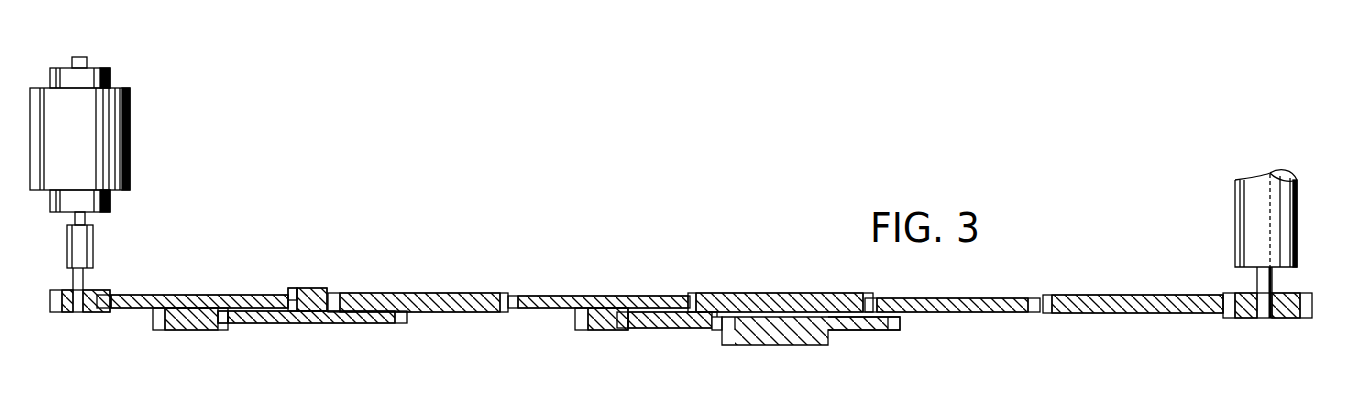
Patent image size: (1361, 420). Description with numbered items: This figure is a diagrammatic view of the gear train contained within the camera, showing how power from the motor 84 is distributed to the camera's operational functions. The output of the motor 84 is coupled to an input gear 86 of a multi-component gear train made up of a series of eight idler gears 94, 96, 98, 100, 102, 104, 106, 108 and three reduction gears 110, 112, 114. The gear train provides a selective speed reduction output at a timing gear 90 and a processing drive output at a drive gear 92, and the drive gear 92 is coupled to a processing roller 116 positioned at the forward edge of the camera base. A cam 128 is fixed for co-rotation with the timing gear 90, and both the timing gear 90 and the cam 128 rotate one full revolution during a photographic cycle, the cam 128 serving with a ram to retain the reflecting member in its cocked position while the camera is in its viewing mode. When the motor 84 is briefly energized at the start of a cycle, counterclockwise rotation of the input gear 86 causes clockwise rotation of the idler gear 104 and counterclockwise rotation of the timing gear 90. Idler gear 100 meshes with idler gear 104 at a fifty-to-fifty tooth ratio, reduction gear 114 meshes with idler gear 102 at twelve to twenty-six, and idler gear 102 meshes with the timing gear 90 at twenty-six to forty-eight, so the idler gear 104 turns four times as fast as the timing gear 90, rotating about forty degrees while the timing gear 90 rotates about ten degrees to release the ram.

The motor 84 is at (131, 128).
The input gear 86 is at (67, 313).
The timing gear 90 is at (882, 323).
The drive gear 92 is at (1280, 314).
The idler gear 94 is at (142, 296).
The idler gear 96 is at (391, 324).
The idler gear 98 is at (455, 293).
The idler gear 100 is at (557, 297).
The idler gear 102 is at (657, 318).
The idler gear 104 is at (812, 295).
The idler gear 106 is at (958, 298).
The idler gear 108 is at (1115, 275).
The reduction gear 110 is at (187, 318).
The reduction gear 112 is at (302, 292).
The reduction gear 114 is at (578, 318).
The processing roller 116 is at (1287, 228).
The cam 128 is at (773, 335).